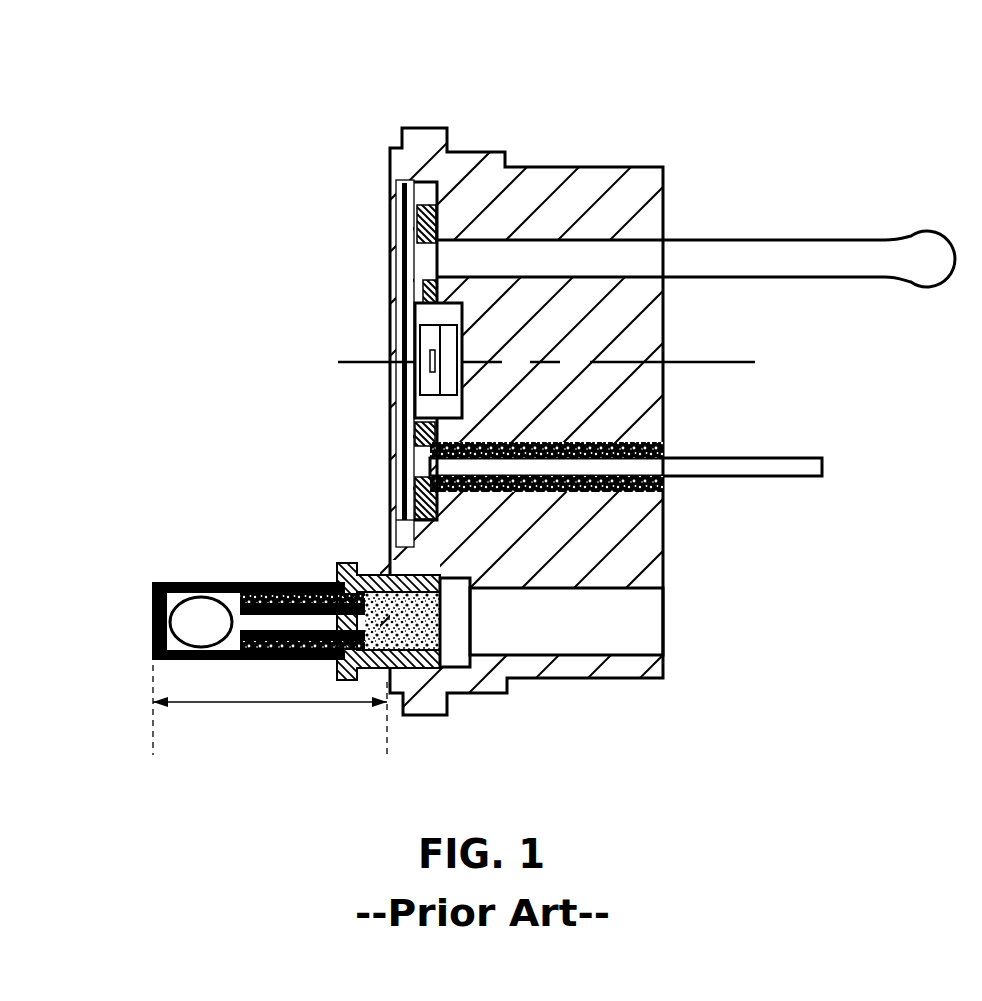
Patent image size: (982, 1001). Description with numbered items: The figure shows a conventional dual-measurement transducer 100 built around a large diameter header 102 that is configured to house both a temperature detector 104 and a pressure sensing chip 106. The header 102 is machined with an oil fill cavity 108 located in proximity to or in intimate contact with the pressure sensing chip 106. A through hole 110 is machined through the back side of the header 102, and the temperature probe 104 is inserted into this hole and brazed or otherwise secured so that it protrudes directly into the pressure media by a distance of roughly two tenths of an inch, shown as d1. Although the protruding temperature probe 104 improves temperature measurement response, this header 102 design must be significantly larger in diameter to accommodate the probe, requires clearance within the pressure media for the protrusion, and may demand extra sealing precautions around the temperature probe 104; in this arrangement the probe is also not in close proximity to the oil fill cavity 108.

The dual-measurement transducer 100 is at (625, 50).
The large diameter header 102 is at (536, 185).
The temperature detector 104 is at (130, 622).
The pressure sensing chip 106 is at (445, 403).
The oil fill cavity 108 is at (385, 240).
The through hole 110 is at (660, 617).